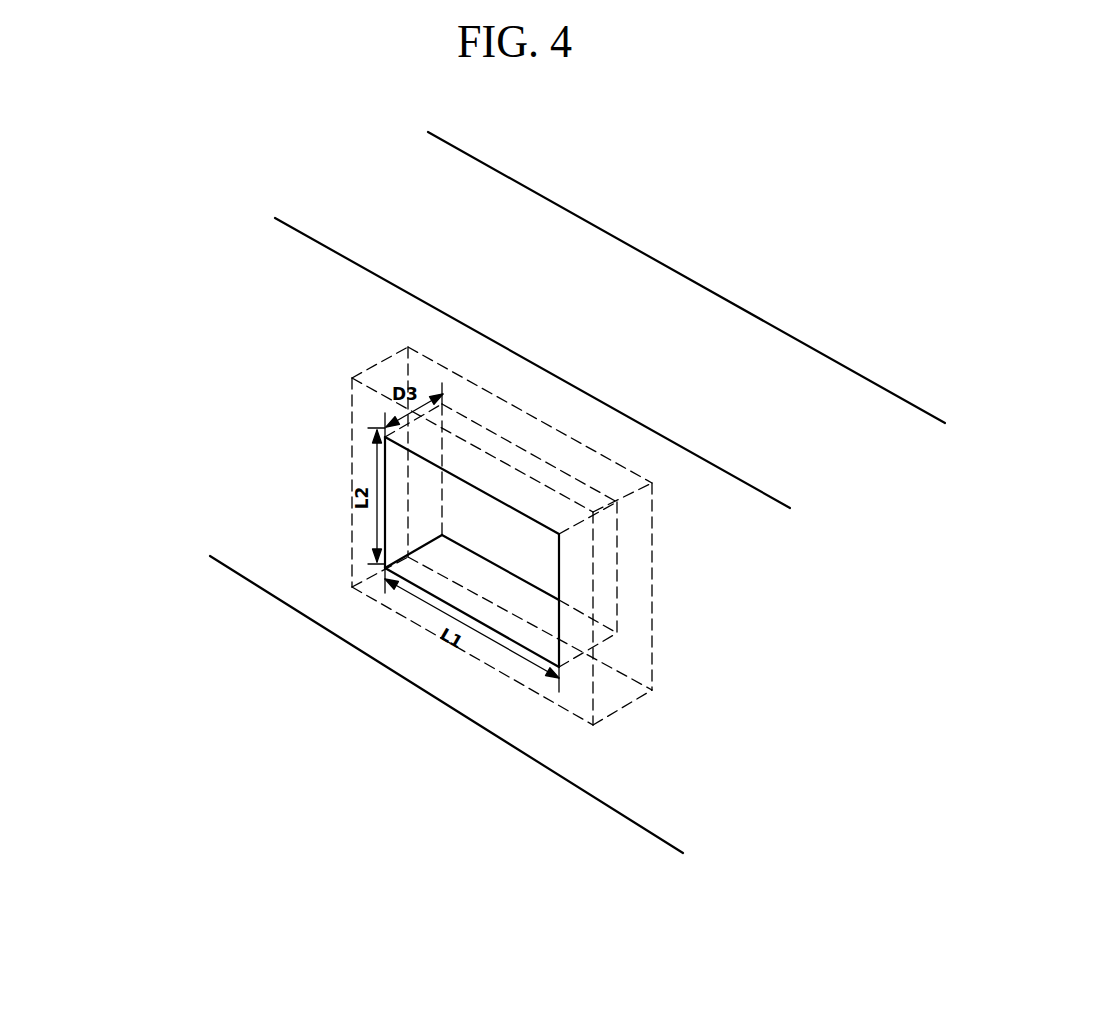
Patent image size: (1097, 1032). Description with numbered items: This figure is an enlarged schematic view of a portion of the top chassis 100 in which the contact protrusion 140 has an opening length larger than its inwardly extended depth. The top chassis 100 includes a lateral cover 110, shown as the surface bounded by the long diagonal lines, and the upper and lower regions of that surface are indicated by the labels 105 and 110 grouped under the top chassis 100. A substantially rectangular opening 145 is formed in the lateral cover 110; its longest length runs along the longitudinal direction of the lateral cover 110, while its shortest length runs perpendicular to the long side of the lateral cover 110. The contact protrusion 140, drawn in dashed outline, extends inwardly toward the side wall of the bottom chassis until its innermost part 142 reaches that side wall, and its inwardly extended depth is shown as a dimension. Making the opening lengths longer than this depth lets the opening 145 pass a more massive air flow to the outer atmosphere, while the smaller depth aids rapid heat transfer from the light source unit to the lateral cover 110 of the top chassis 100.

The top chassis 100 is at (501, 492).
The upper plate 105 is at (395, 235).
The lateral cover 110 is at (297, 363).
The contact protrusion 140 is at (589, 536).
The innermost part 142 is at (632, 590).
The opening 145 is at (481, 541).